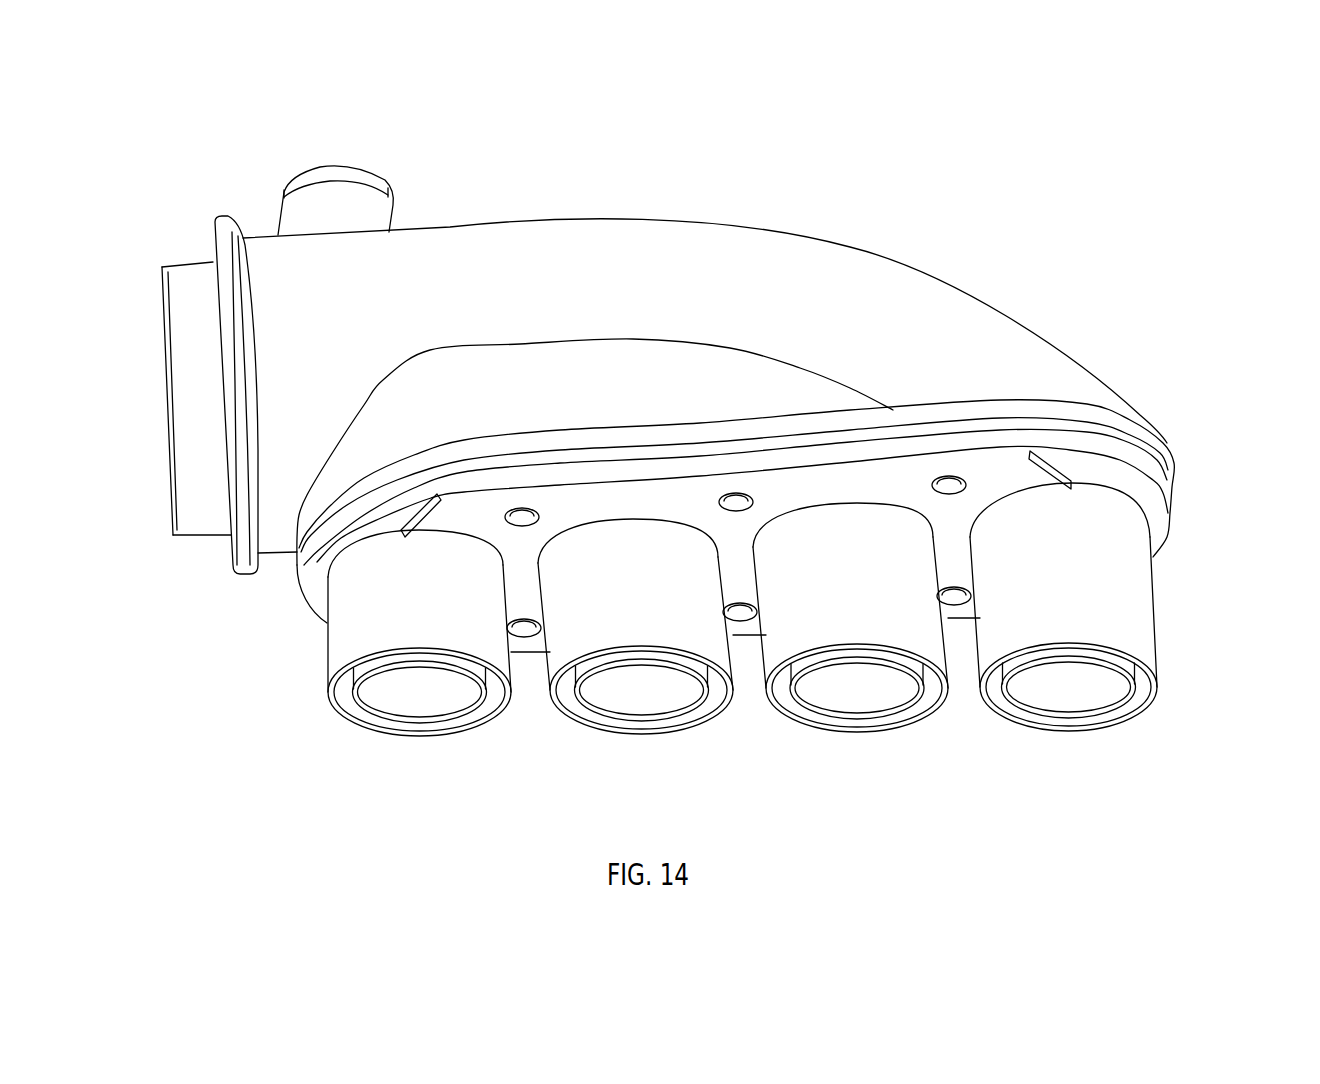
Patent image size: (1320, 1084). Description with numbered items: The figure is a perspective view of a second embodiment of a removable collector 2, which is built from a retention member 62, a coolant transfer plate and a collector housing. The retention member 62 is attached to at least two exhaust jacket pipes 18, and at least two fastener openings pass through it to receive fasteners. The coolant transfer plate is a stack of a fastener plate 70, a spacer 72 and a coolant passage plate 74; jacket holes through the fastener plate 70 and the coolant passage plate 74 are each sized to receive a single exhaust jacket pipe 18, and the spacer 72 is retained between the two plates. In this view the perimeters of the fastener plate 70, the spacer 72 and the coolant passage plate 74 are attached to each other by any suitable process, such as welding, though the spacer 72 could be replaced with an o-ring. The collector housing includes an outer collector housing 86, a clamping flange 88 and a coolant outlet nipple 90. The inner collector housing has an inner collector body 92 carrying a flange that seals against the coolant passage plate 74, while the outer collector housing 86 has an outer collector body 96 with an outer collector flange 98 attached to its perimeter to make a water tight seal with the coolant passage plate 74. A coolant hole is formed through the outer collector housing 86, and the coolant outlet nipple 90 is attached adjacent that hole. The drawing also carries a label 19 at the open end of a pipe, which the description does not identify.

The removable collector 2 is at (1098, 258).
The exhaust jacket pipes 18 is at (370, 628).
The runner outlet bore 19 is at (423, 707).
The retention member 62 is at (1030, 482).
The fastener plate 70 is at (1163, 510).
The spacer 72 is at (1147, 455).
The coolant passage plate 74 is at (1065, 410).
The outer collector housing 86 is at (705, 350).
The clamping flange 88 is at (243, 560).
The coolant outlet nipple 90 is at (390, 197).
The inner collector body 92 is at (202, 512).
The outer collector body 96 is at (797, 287).
The outer collector flange 98 is at (620, 370).